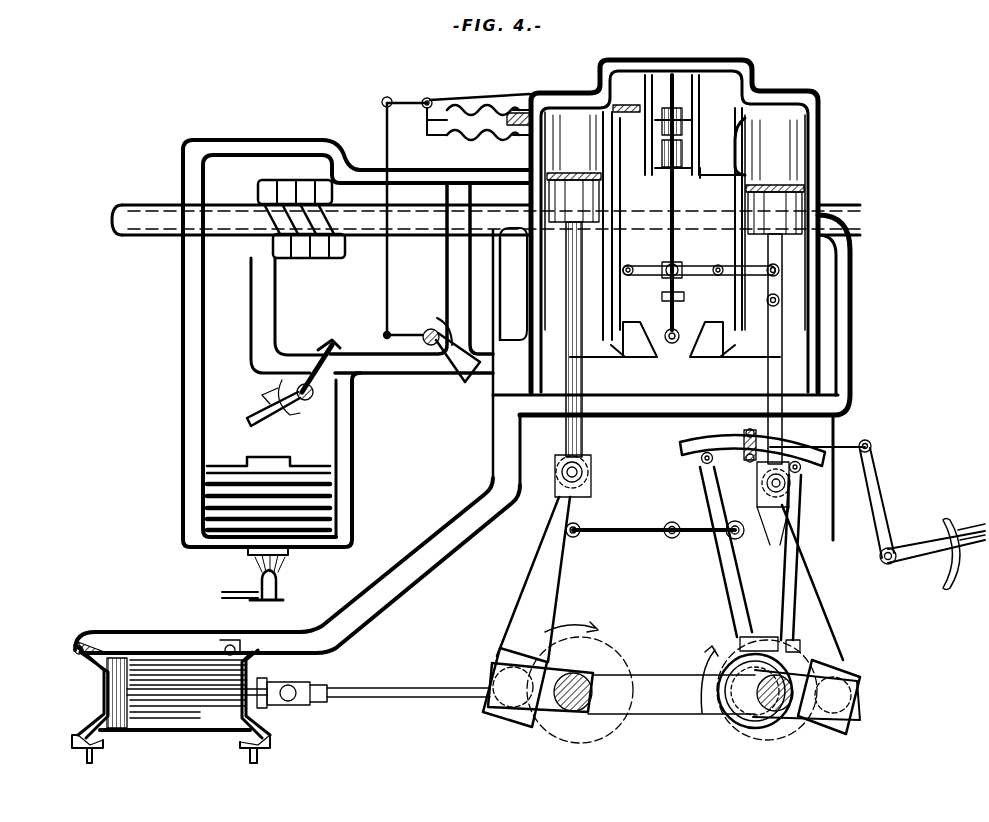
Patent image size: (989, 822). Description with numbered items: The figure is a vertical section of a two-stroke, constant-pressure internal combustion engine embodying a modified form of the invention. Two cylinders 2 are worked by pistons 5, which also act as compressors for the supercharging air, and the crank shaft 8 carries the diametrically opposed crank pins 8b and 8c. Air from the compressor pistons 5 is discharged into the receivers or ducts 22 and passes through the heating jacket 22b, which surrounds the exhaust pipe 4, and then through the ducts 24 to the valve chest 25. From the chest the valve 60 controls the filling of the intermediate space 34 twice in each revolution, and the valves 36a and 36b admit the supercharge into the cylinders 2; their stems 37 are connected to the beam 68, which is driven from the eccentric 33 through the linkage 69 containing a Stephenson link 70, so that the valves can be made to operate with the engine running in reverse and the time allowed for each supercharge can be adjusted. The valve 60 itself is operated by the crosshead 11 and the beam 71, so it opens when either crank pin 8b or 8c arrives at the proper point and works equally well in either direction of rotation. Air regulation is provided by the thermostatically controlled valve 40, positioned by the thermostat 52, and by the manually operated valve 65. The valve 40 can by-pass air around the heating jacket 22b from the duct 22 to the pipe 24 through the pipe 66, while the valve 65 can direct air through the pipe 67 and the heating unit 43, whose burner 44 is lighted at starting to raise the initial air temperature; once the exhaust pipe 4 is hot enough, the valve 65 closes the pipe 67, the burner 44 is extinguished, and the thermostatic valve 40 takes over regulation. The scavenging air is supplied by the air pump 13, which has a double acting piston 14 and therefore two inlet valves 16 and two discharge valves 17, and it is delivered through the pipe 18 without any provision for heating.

The cylinder 2 is at (665, 227).
The exhaust pipe 4 is at (136, 220).
The piston 5 is at (562, 180).
The crank shaft 8 is at (765, 698).
The crank pin 8b is at (862, 688).
The crank pin 8c is at (520, 718).
The crosshead 11 is at (584, 470).
The air pump 13 is at (180, 735).
The double acting piston 14 is at (148, 725).
The inlet valve 16 is at (84, 733).
The discharge valve 17 is at (98, 640).
The pipe 18 is at (290, 633).
The receiver or duct 22 is at (395, 375).
The heating jacket 22b is at (288, 192).
The duct 24 is at (432, 170).
The valve chest 25 is at (680, 182).
The eccentric 33 is at (735, 650).
The intermediate space 34 is at (640, 125).
The valve 36a is at (622, 125).
The valve 36b is at (715, 130).
The valve stem 37 is at (622, 247).
The thermostatically controlled valve 40 is at (440, 328).
The heating unit 43 is at (338, 480).
The burner 44 is at (258, 576).
The thermostat 52 is at (470, 105).
The valve 60 is at (737, 137).
The manually operated valve 65 is at (314, 352).
The pipe 66 is at (442, 248).
The pipe 67 is at (332, 434).
The beam 68 is at (680, 272).
The linkage 69 is at (760, 432).
The Stephenson link 70 is at (818, 466).
The beam 71 is at (622, 526).